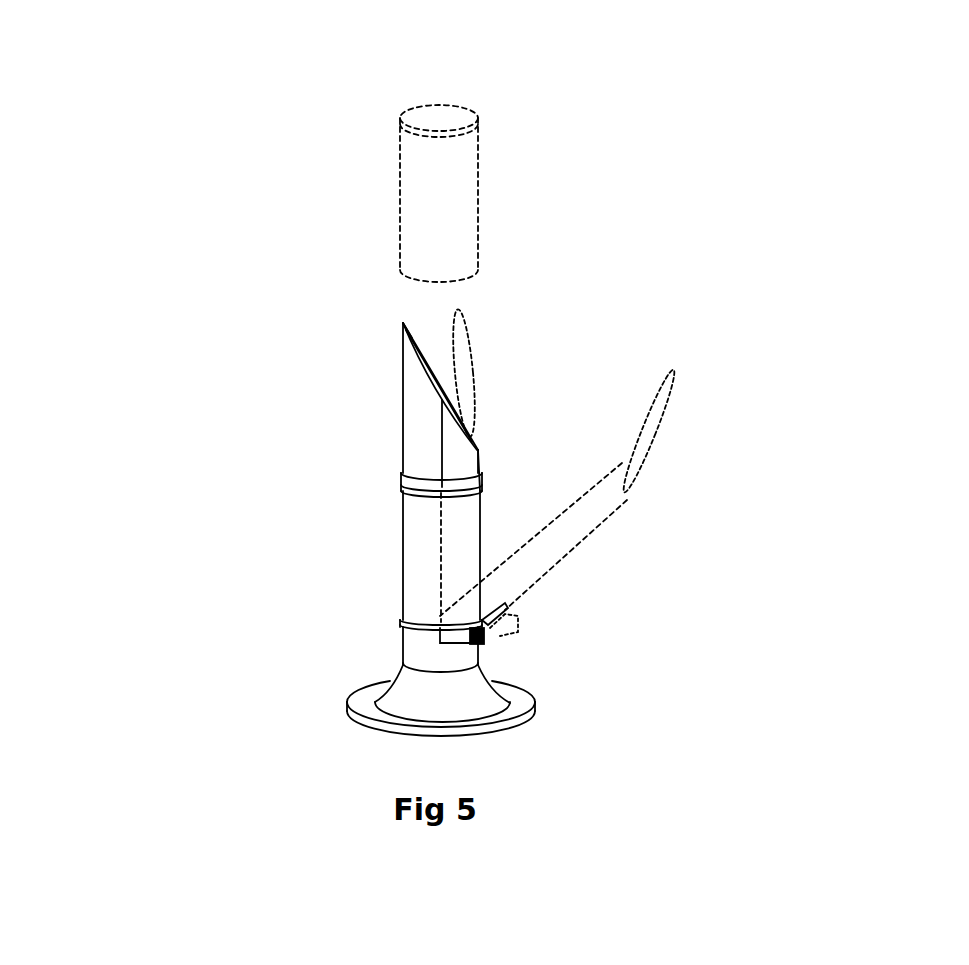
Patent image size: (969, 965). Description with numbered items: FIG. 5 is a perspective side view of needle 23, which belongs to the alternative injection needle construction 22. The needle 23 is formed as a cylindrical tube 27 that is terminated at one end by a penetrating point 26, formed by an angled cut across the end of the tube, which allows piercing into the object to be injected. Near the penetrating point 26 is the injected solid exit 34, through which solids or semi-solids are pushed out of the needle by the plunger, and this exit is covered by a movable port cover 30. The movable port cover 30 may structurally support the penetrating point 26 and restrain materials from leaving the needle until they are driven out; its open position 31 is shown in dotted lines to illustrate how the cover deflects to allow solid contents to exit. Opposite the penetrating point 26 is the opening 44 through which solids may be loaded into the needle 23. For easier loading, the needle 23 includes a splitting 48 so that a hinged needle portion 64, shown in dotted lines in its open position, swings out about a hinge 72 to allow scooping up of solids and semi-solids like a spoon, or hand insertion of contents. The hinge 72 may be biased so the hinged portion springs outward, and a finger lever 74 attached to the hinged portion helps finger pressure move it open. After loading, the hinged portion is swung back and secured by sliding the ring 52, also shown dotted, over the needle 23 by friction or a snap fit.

The alternative construction 22 is at (340, 603).
The needle 23 is at (417, 440).
The penetrating point 26 is at (405, 323).
The cylindrical tube 27 is at (457, 470).
The movable port cover 30 is at (428, 372).
The open position of movable port cover 31 is at (472, 352).
The injected solid exit 34 is at (455, 390).
The opening 44 is at (447, 737).
The splitting 48 is at (403, 472).
The ring 52 is at (443, 193).
The hinged needle portion 64 is at (537, 553).
The hinge 72 is at (515, 628).
The finger lever 74 is at (500, 616).